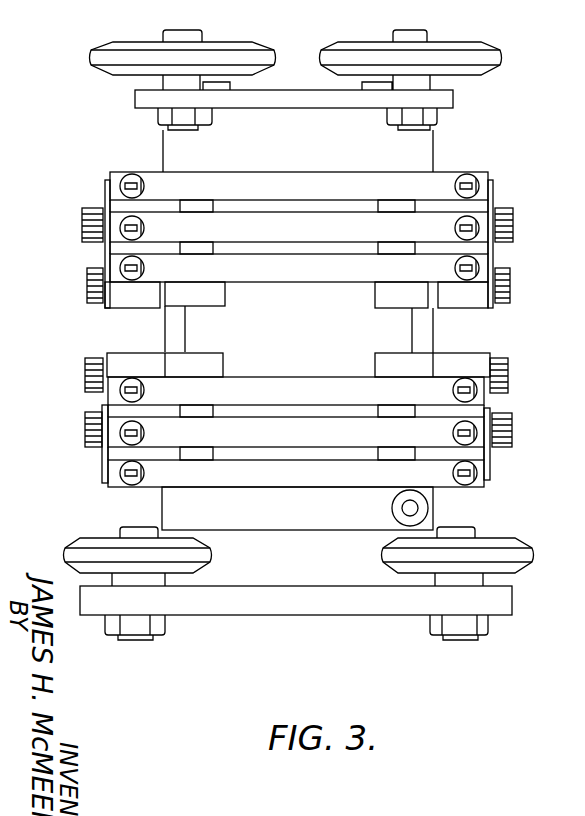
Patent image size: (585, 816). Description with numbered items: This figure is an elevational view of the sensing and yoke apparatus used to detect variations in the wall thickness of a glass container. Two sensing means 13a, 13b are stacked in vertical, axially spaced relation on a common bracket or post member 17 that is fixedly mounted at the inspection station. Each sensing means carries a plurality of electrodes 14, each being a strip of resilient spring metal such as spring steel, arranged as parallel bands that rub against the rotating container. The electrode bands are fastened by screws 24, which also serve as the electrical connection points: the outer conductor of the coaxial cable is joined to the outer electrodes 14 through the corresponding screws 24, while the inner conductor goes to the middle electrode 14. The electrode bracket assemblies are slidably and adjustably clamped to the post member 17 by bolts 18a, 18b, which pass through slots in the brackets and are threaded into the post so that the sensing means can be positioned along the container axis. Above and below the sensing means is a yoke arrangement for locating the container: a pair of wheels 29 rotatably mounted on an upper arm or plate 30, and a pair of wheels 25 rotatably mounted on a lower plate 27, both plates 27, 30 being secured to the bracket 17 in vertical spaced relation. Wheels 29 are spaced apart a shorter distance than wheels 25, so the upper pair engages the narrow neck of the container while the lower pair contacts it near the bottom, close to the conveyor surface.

The sensing means 13a is at (494, 177).
The sensing means 13b is at (495, 483).
The electrode 14 is at (335, 186).
The bracket or post member 17 is at (407, 148).
The bolt 18a is at (82, 228).
The bolt 18b is at (85, 433).
The screw 24 is at (132, 174).
The wheel 25 is at (77, 556).
The plate or arm 27 is at (300, 603).
The wheel 29 is at (228, 43).
The arm or plate 30 is at (276, 112).